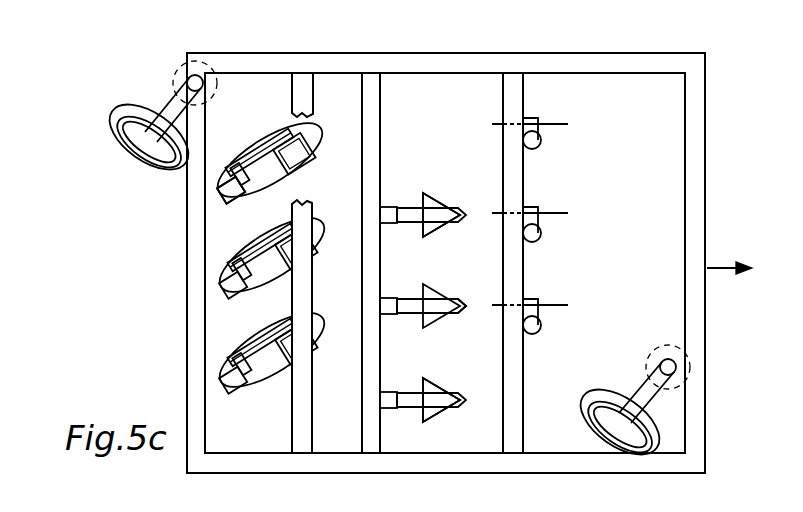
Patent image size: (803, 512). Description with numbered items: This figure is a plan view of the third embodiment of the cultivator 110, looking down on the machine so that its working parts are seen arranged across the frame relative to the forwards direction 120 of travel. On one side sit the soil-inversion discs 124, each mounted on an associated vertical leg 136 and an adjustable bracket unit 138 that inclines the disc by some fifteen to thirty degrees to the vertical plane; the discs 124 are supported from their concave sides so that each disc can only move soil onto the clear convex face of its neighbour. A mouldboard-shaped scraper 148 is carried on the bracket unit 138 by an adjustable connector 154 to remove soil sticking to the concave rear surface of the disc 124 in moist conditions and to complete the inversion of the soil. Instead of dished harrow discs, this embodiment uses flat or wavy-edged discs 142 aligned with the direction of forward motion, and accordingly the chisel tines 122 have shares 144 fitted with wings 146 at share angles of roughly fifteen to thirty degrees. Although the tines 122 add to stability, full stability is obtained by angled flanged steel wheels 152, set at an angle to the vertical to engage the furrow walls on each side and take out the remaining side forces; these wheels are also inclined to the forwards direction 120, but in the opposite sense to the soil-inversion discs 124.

The cultivator 110 is at (652, 41).
The forwards direction 120 is at (722, 266).
The chisel tines 122 is at (456, 206).
The disc 124 is at (316, 131).
The vertical leg 136 is at (303, 175).
The adjustable bracket unit 138 is at (256, 188).
The flat or wavy-edged discs 142 is at (562, 128).
The shares 144 is at (452, 300).
The wings 146 is at (420, 205).
The mouldboard-shaped scraper 148 is at (240, 194).
The angled flanged steel wheels 152 is at (124, 111).
The adjustable connector 154 is at (255, 146).